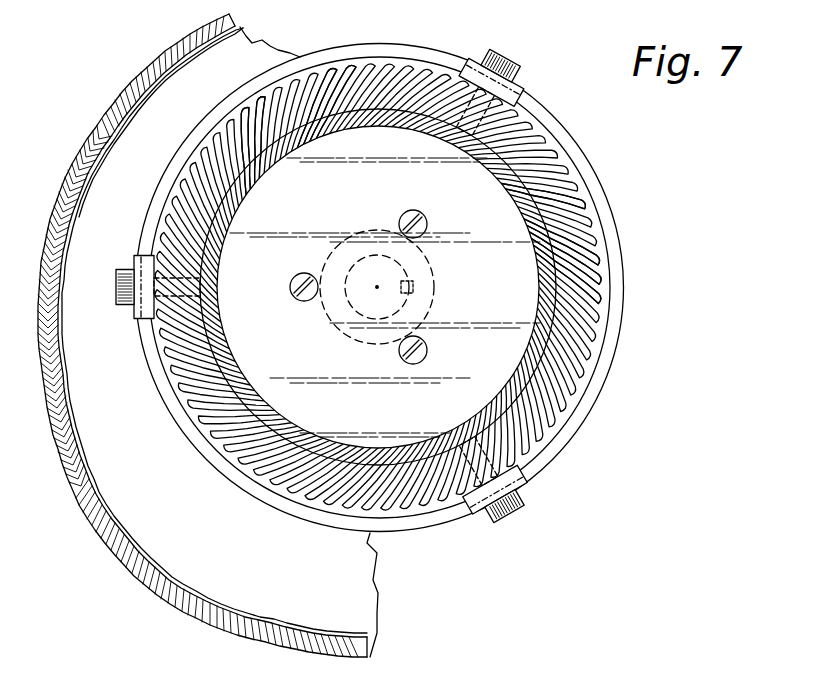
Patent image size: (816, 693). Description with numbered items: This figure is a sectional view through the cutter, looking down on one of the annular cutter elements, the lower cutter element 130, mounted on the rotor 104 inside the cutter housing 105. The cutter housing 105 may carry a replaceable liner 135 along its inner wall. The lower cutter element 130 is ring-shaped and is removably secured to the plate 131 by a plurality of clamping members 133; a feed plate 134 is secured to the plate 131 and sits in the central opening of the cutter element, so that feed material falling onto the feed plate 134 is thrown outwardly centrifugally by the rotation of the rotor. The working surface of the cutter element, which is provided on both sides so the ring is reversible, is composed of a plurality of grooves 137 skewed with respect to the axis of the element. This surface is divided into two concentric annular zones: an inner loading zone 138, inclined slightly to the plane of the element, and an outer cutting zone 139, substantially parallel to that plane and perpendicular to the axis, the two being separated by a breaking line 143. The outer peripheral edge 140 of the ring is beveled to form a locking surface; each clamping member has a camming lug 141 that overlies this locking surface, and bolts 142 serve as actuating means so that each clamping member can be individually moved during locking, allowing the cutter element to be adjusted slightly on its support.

The rotor 104 is at (418, 277).
The cutter housing 105 is at (121, 101).
The lower cutter element 130 is at (600, 288).
The plate 131 is at (168, 406).
The clamping members 133 is at (138, 319).
The feed plate 134 is at (396, 196).
The replaceable liner 135 is at (80, 201).
The grooves 137 is at (224, 450).
The inner zone 138 is at (290, 433).
The cutting zone 139 is at (246, 459).
The outer peripheral edge 140 is at (160, 354).
The camming lug 141 is at (149, 263).
The bolts 142 is at (121, 287).
The breaking line 143 is at (236, 404).